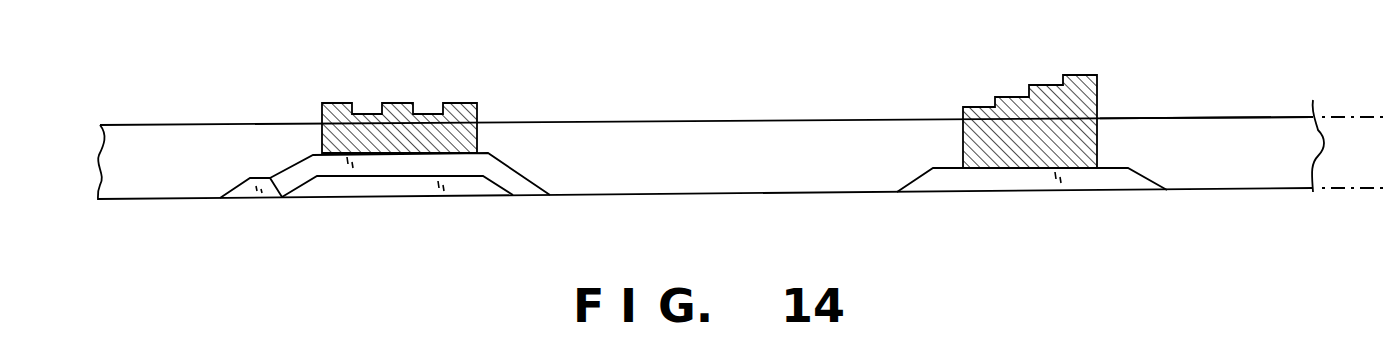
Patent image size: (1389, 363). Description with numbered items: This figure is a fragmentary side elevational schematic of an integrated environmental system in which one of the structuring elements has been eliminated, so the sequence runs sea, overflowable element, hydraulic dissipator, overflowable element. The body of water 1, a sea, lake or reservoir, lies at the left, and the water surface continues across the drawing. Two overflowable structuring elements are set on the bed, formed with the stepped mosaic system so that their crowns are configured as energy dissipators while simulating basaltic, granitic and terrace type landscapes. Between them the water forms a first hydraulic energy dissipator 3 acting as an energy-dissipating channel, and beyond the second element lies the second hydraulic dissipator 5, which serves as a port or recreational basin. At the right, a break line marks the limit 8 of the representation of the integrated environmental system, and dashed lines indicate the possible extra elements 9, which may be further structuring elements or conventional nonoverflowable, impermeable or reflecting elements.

The body of water 1 is at (192, 123).
The first hydraulic energy dissipator 3 is at (740, 120).
The second hydraulic dissipator 5 is at (1187, 117).
The limit of the representation of the integrated environmental system 8 is at (1312, 100).
The extra elements 9 is at (1372, 151).